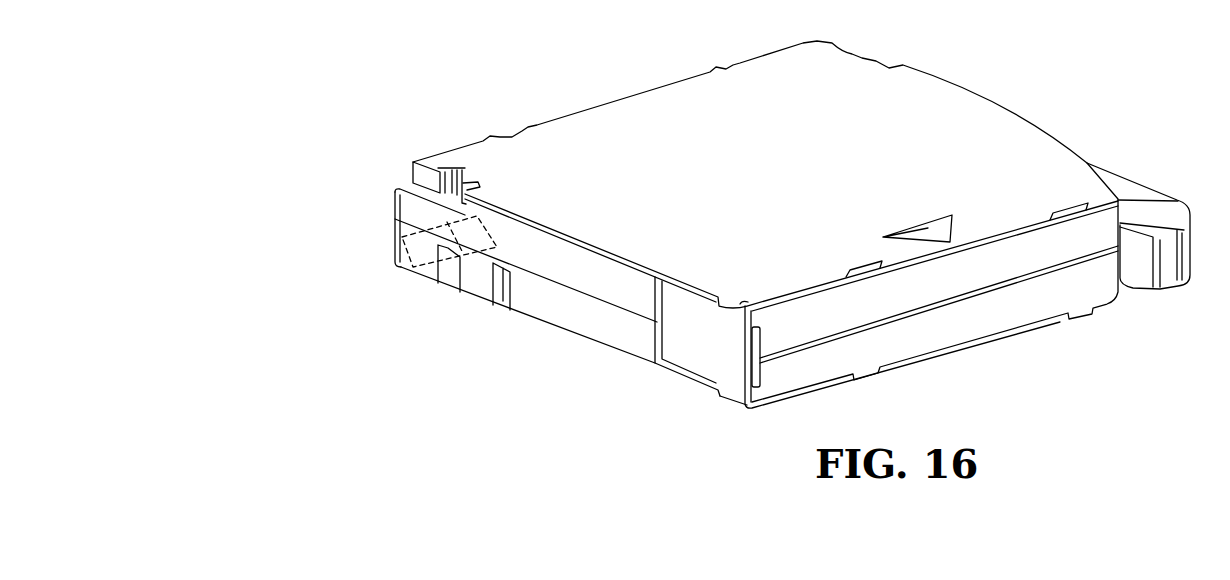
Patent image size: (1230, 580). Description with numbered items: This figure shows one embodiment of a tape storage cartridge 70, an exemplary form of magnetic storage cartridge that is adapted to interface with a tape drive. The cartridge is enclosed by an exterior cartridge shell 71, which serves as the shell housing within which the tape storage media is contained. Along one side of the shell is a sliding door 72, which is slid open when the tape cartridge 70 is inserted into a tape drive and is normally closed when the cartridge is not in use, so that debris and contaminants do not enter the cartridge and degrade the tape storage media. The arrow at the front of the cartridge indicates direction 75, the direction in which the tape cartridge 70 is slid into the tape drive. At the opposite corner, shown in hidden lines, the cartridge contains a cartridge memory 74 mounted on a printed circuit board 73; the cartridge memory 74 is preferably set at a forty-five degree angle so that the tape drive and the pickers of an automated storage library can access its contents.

The tape storage cartridge 70 is at (1078, 88).
The exterior cartridge shell 71 is at (667, 83).
The sliding door 72 is at (693, 343).
The printed circuit board 73 is at (420, 260).
The cartridge memory 74 is at (460, 235).
The direction 75 is at (932, 335).